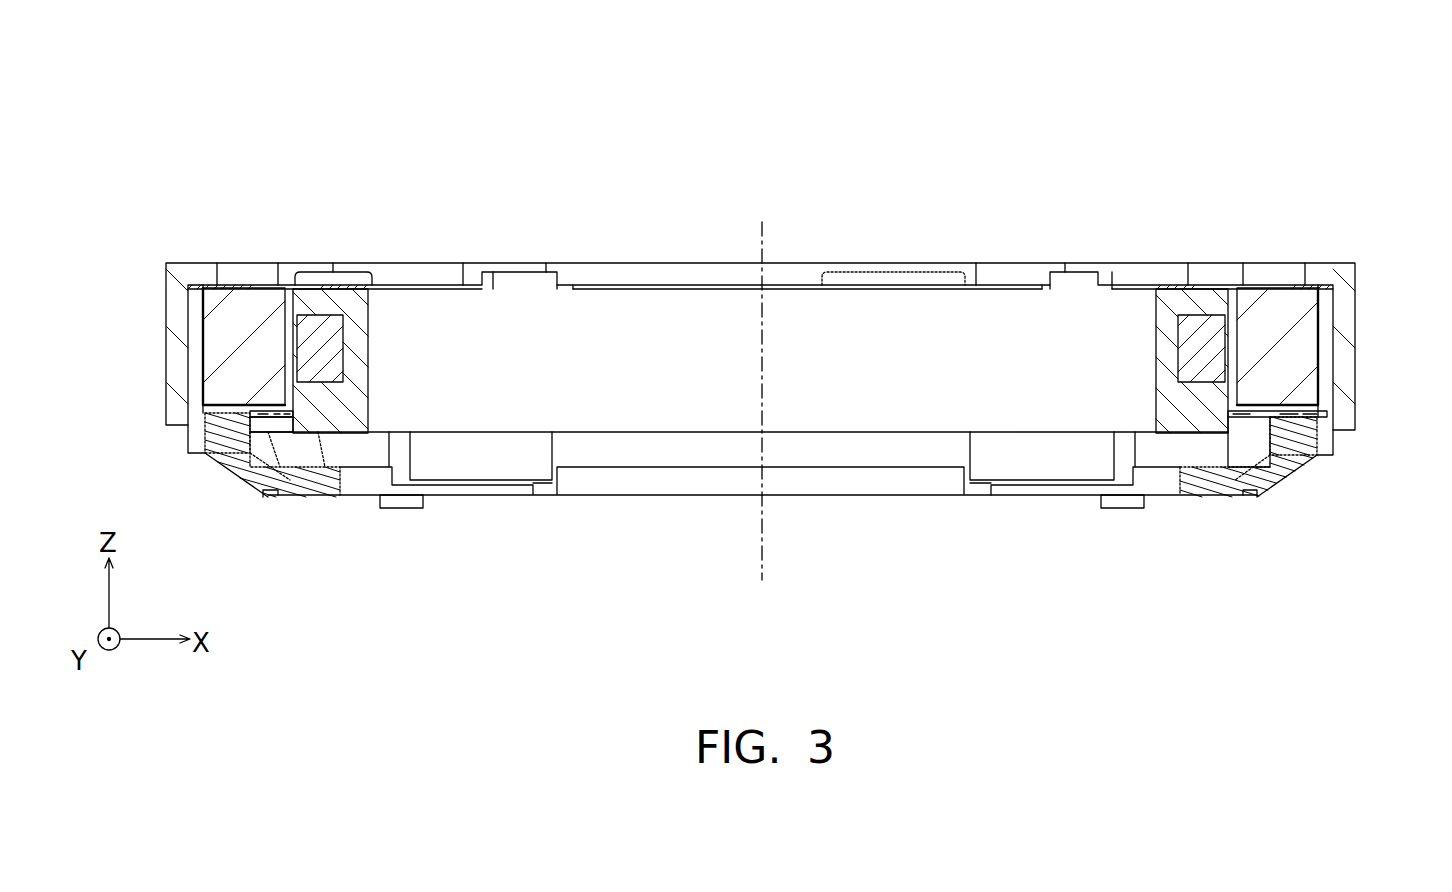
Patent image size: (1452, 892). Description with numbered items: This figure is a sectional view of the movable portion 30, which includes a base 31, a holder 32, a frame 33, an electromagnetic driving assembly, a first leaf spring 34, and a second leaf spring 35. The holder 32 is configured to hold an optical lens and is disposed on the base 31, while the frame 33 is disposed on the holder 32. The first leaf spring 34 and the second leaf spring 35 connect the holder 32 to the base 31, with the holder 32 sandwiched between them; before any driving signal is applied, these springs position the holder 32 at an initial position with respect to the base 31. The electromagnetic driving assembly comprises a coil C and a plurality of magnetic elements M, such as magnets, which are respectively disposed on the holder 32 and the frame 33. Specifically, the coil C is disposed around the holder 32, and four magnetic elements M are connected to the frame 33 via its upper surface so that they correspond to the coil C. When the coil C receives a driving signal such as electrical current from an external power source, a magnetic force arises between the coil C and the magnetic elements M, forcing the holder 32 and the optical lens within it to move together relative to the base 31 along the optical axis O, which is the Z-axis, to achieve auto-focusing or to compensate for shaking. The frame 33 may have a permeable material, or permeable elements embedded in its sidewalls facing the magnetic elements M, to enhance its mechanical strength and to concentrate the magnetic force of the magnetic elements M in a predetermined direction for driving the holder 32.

The movable portion 30 is at (133, 165).
The base 31 is at (297, 493).
The holder 32 is at (302, 298).
The frame 33 is at (178, 287).
The first leaf spring 34 is at (347, 298).
The second leaf spring 35 is at (1238, 414).
The magnetic element M is at (250, 324).
The coil C is at (320, 364).
The optical axis O is at (759, 384).